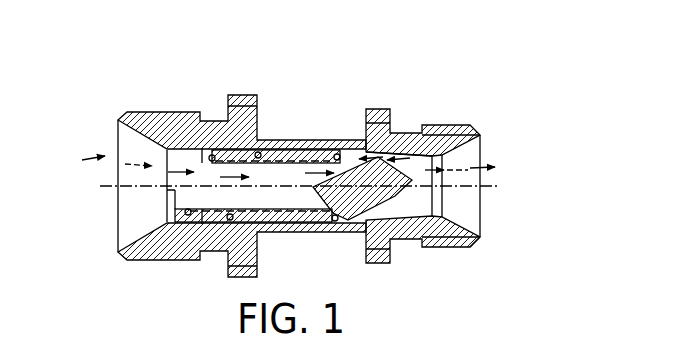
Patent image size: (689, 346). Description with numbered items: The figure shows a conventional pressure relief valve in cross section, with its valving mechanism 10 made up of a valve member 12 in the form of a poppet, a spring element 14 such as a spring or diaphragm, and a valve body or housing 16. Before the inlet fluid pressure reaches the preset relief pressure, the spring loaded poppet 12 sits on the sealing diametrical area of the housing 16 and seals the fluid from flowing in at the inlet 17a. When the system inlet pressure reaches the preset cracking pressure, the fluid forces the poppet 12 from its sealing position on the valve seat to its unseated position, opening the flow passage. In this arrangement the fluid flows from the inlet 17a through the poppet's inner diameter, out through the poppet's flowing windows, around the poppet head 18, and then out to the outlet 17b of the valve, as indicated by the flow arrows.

The valving mechanism 10 is at (124, 71).
The valve member 12 is at (385, 166).
The spring element 14 is at (335, 222).
The valve body or housing 16 is at (458, 236).
The inlet 17a is at (118, 206).
The outlet 17b is at (482, 141).
The poppet head 18 is at (378, 162).